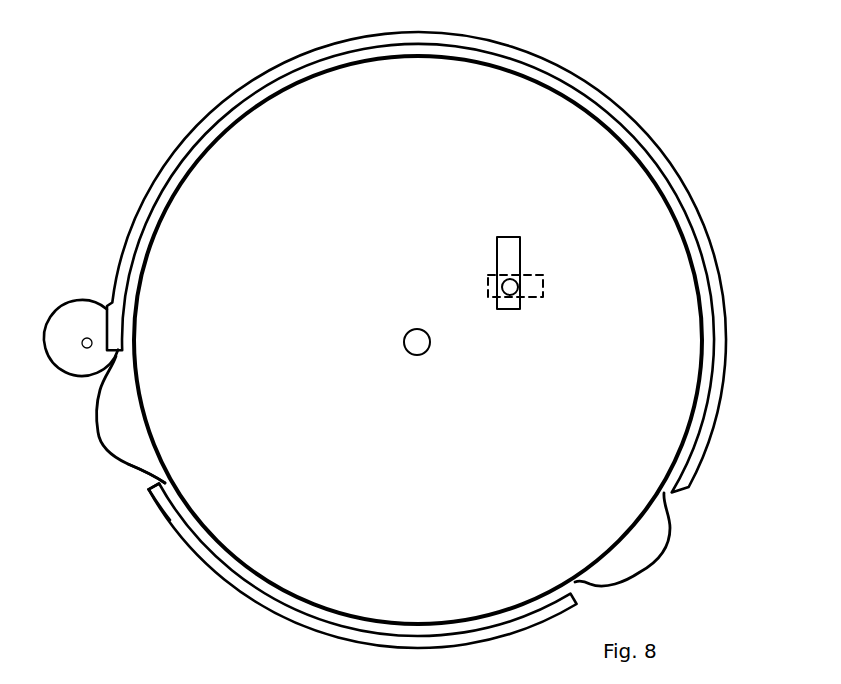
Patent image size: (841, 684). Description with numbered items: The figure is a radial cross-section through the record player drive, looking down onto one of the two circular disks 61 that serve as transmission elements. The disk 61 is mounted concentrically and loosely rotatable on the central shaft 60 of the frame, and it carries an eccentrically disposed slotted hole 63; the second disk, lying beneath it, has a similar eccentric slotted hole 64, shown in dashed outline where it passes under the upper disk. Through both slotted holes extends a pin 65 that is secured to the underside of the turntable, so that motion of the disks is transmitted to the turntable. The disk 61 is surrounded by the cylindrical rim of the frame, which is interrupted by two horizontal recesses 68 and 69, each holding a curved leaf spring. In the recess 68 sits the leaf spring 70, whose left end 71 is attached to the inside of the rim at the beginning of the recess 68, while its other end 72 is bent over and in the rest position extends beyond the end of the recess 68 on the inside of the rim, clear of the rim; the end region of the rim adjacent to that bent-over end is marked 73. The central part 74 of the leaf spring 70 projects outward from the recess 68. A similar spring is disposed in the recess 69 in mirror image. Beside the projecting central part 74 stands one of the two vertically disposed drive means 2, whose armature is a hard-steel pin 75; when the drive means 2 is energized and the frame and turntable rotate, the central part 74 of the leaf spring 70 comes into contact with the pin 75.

The drive means 2 is at (63, 286).
The central shaft 60 is at (407, 355).
The circular disk 61 is at (660, 265).
The slotted hole 63 is at (508, 245).
The slotted hole 64 is at (487, 282).
The pin 65 is at (513, 278).
The recess 68 is at (150, 488).
The recess 69 is at (682, 547).
The leaf spring 70 is at (140, 470).
The left end 71 is at (120, 338).
The other end 72 is at (163, 490).
The ring end face 73 is at (147, 493).
The central part 74 is at (98, 435).
The hard-steel pin 75 is at (85, 348).